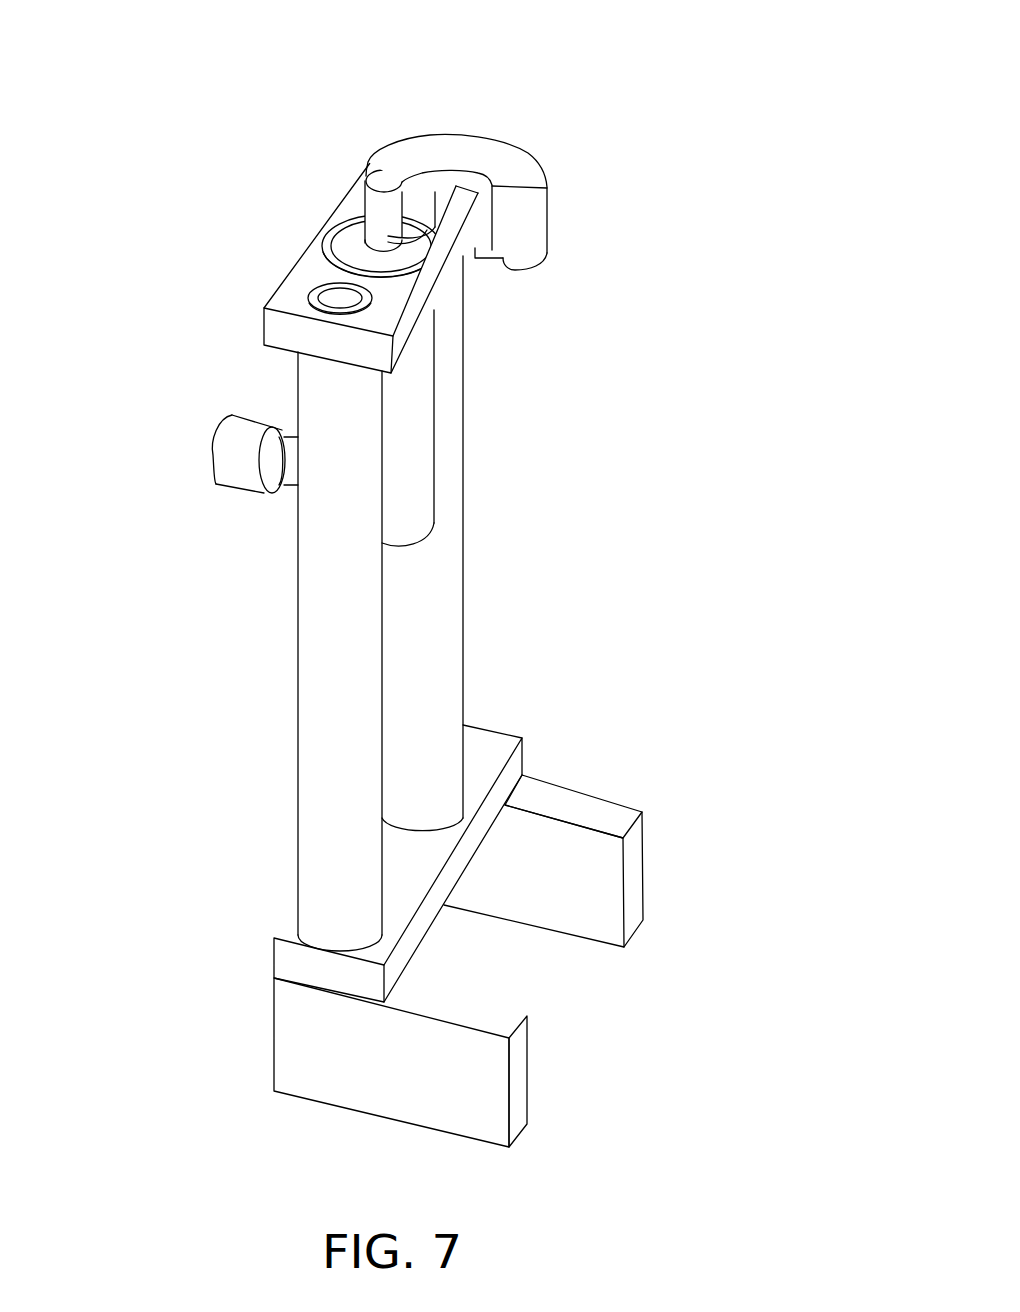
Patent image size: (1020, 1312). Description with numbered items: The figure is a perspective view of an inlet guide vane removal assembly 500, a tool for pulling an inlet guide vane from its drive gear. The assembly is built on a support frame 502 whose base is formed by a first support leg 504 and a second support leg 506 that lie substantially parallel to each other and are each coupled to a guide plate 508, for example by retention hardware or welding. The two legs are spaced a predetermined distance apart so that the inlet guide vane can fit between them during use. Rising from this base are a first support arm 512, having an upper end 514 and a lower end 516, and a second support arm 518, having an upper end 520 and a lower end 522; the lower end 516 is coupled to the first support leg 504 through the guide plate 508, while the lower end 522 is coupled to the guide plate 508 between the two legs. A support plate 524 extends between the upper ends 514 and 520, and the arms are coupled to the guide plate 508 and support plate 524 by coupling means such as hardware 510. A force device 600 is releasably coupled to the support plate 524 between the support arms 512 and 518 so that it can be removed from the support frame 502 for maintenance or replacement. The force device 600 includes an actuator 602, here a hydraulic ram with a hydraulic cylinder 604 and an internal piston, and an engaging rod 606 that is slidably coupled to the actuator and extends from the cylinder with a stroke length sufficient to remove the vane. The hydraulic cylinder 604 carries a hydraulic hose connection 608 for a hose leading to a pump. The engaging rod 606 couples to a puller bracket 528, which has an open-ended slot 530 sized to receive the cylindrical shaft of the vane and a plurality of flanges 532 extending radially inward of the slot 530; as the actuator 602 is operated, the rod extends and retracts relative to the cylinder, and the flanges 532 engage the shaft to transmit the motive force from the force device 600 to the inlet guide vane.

The inlet guide vane removal assembly 500 is at (436, 588).
The support frame 502 is at (422, 709).
The first support leg 504 is at (527, 1125).
The second support leg 506 is at (643, 922).
The guide plate 508 is at (523, 737).
The hardware 510 is at (323, 300).
The first support arm 512 is at (295, 632).
The upper end 514 is at (381, 230).
The lower end 516 is at (426, 937).
The second support arm 518 is at (508, 543).
The upper end 520 is at (482, 278).
The lower end 522 is at (501, 712).
The support plate 524 is at (315, 279).
The puller bracket 528 is at (507, 204).
The open-ended slot 530 is at (547, 188).
The flanges 532 is at (388, 235).
The force device 600 is at (241, 651).
The actuator 602 is at (447, 420).
The hydraulic cylinder 604 is at (411, 527).
The engaging rod 606 is at (360, 218).
The hydraulic hose connection 608 is at (213, 450).